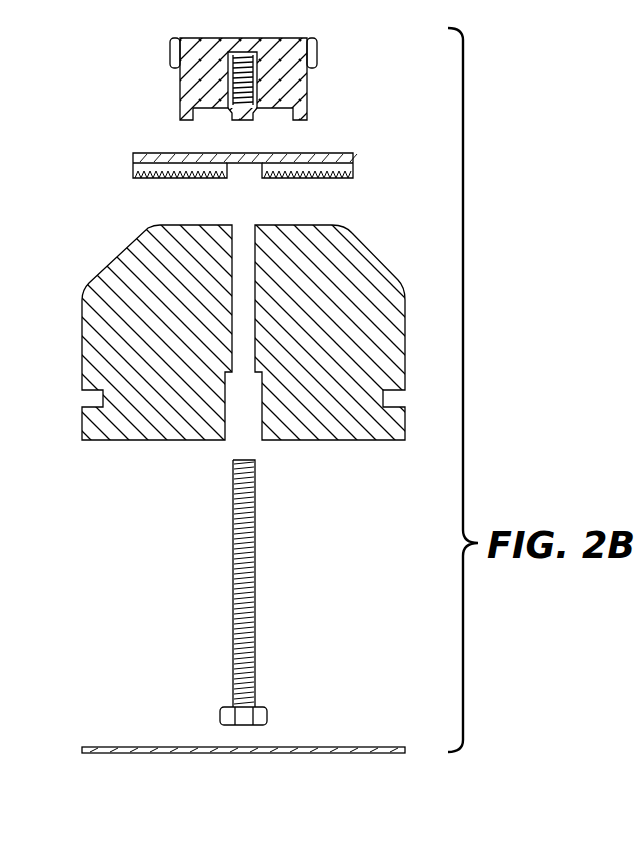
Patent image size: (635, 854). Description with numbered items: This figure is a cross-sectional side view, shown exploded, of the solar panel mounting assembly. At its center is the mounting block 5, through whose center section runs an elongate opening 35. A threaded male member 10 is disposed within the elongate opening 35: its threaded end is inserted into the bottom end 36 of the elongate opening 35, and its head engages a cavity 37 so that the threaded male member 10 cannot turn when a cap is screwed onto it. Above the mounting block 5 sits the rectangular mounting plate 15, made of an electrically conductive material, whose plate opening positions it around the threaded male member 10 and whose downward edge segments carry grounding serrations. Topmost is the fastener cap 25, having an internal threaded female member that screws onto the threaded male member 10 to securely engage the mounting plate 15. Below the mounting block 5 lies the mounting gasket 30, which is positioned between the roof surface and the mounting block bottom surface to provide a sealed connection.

The mounting block 5 is at (82, 330).
The threaded male member 10 is at (255, 530).
The mounting plate 15 is at (354, 158).
The fastener cap 25 is at (320, 53).
The mounting gasket 30 is at (322, 756).
The elongate opening 35 is at (253, 250).
The bottom end 36 is at (233, 443).
The cavity 37 is at (254, 420).